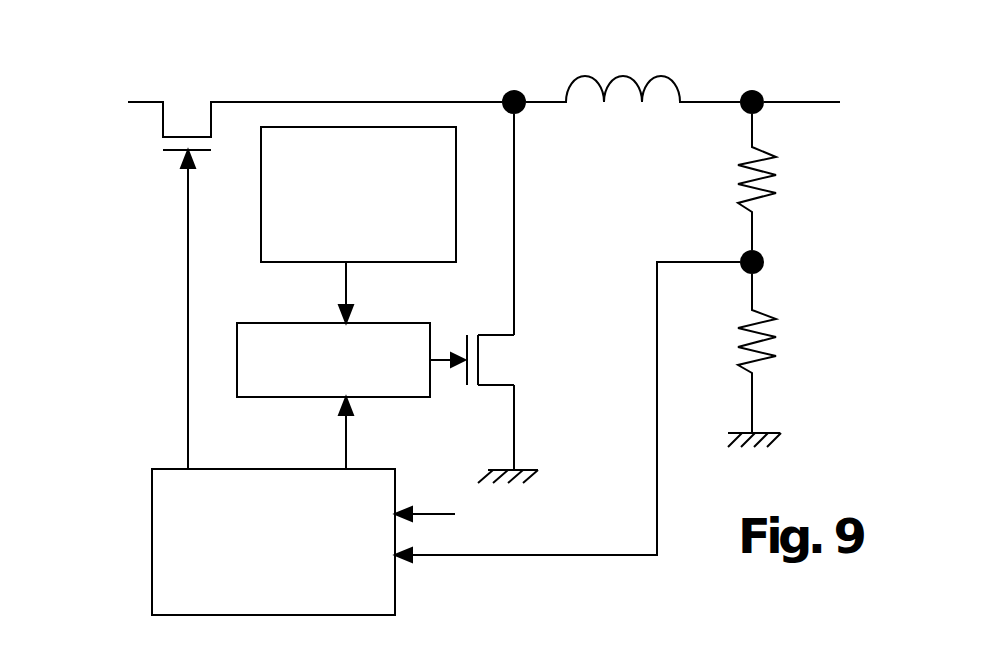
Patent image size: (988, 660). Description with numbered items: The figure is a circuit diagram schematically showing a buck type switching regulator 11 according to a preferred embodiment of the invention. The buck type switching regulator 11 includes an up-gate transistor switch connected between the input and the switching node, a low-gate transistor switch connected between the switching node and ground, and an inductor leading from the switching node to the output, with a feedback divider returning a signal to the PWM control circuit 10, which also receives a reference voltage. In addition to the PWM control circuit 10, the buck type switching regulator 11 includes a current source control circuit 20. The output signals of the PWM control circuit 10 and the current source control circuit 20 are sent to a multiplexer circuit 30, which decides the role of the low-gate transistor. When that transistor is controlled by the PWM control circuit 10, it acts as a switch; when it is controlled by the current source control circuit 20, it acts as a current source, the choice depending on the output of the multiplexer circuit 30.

The buck type switching regulator 11 is at (112, 271).
The current source control circuit 20 is at (375, 233).
The multiplexer circuit 30 is at (403, 380).
The PWM control circuit 10 is at (292, 582).